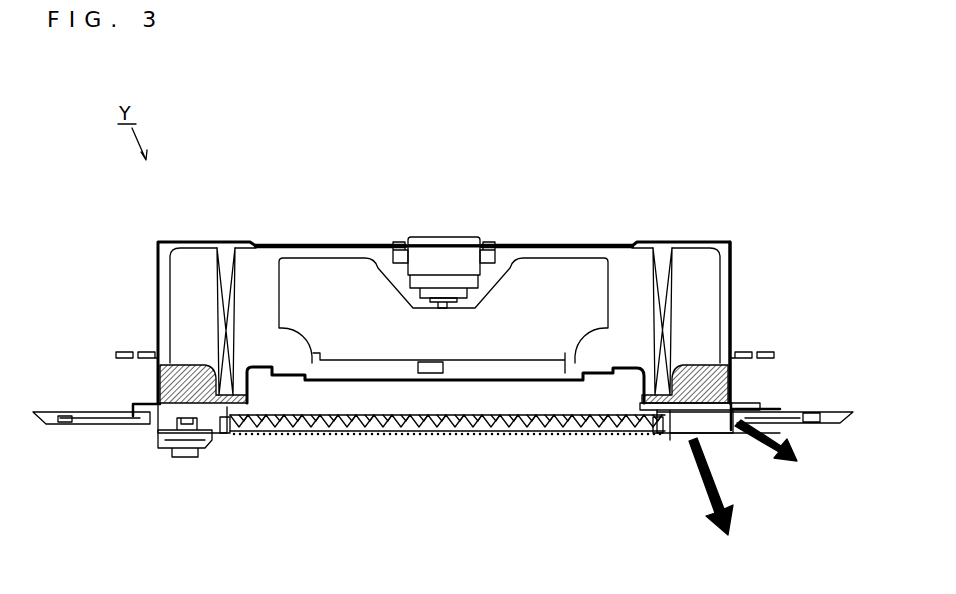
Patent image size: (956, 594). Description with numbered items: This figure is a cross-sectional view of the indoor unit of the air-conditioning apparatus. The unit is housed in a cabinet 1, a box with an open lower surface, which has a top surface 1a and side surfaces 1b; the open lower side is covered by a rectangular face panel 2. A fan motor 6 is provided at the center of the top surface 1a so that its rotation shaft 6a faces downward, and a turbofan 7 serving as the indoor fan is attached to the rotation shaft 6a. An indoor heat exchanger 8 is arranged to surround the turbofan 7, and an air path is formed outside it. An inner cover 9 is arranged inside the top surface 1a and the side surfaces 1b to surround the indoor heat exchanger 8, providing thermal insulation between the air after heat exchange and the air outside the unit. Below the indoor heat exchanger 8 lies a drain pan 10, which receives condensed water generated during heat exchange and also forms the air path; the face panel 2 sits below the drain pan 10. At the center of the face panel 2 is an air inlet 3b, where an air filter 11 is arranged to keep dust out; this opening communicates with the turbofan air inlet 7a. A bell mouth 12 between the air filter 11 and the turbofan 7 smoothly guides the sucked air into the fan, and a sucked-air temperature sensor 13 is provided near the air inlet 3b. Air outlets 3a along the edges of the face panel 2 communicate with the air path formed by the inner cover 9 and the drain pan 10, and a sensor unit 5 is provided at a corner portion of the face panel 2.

The cabinet 1 is at (720, 133).
The top surface 1a is at (537, 243).
The side surfaces 1b is at (731, 263).
The face panel 2 is at (772, 413).
The air outlets 3a is at (703, 423).
The air inlet 3b is at (500, 432).
The sensor unit 5 is at (160, 445).
The fan motor 6 is at (420, 257).
The rotation shaft 6a is at (445, 300).
The turbofan 7 is at (340, 280).
The turbofan air inlet 7a is at (352, 357).
The indoor heat exchanger 8 is at (227, 268).
The inner cover 9 is at (165, 295).
The drain pan 10 is at (678, 404).
The air filter 11 is at (314, 436).
The bell mouth 12 is at (463, 380).
The sucked-air temperature sensor 13 is at (423, 373).